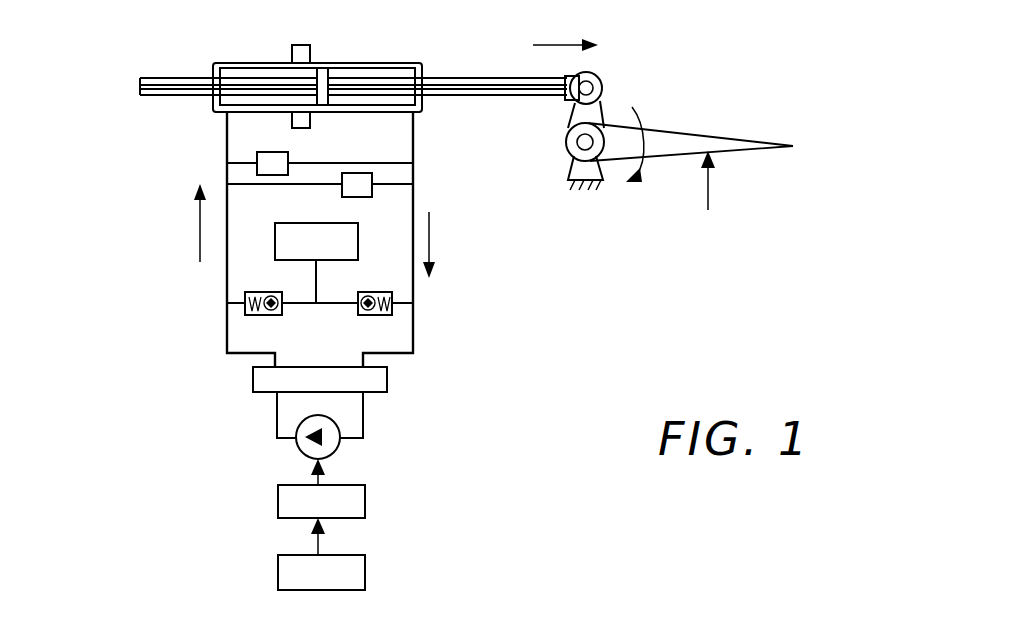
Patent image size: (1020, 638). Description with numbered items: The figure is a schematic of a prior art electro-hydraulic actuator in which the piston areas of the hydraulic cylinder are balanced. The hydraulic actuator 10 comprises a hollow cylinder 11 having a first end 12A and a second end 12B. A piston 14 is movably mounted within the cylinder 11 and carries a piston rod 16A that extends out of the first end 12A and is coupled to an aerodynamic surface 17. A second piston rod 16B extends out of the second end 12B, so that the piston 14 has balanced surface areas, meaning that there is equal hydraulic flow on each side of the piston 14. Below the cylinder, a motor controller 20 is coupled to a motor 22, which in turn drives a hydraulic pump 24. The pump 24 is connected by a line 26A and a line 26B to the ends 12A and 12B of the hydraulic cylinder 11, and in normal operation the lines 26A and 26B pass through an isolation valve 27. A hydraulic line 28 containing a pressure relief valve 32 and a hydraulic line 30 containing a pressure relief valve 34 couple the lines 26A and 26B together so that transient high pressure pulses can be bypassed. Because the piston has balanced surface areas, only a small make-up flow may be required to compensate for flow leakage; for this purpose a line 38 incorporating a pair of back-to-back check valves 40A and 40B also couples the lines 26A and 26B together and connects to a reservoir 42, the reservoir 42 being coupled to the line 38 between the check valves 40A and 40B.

The hydraulic actuator 10 is at (90, 85).
The hollow cylinder 11 is at (381, 63).
The first end 12A is at (422, 70).
The second end 12B is at (213, 63).
The piston 14 is at (327, 70).
The piston rod 16A is at (500, 78).
The second piston rod 16B is at (150, 78).
The aerodynamic surface 17 is at (705, 140).
The motor controller 20 is at (365, 565).
The motor 22 is at (365, 498).
The hydraulic pump 24 is at (336, 452).
The line 26A is at (413, 287).
The line 26B is at (228, 262).
The isolation valve 27 is at (387, 383).
The hydraulic line 28 is at (384, 161).
The hydraulic line 30 is at (248, 184).
The pressure relief valve 32 is at (356, 199).
The pressure relief valve 34 is at (262, 152).
The line 38 is at (305, 304).
The check valve 40A is at (383, 322).
The check valve 40B is at (262, 292).
The reservoir 42 is at (335, 254).